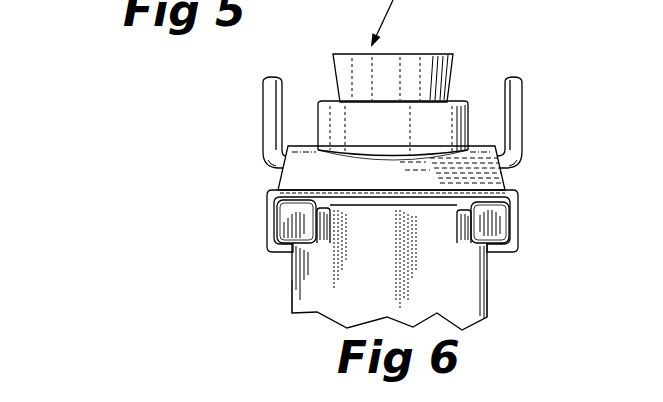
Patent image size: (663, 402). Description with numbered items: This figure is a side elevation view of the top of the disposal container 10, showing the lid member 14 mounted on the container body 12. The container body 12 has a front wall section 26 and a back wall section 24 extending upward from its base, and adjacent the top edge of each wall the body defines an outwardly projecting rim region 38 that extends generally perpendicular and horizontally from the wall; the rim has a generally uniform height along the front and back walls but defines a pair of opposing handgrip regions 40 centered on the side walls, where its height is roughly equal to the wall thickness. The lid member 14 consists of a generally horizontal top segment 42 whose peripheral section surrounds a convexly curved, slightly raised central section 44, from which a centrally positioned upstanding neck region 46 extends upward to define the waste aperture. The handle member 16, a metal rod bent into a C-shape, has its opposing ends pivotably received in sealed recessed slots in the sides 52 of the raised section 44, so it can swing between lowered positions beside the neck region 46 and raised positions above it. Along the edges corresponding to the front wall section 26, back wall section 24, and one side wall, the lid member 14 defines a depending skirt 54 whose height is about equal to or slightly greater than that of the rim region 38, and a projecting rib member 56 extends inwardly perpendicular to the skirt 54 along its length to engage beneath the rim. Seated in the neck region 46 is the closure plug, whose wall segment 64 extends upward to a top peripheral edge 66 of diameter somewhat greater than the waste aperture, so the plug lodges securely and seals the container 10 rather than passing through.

The disposal container 10 is at (150, 148).
The container body 12 is at (280, 293).
The lid member 14 is at (262, 195).
The handle member 16 is at (263, 86).
The back wall section 24 is at (490, 307).
The front wall section 26 is at (292, 312).
The rim region 38 is at (280, 223).
The handgrip regions 40 is at (363, 207).
The top segment 42 is at (306, 179).
The raised central section 44 is at (472, 146).
The neck region 46 is at (318, 108).
The sides of the raised section 52 is at (276, 148).
The depending skirt 54 is at (267, 213).
The projecting rib member 56 is at (283, 254).
The wall segment 64 is at (470, 42).
The top peripheral edge 66 is at (408, 53).